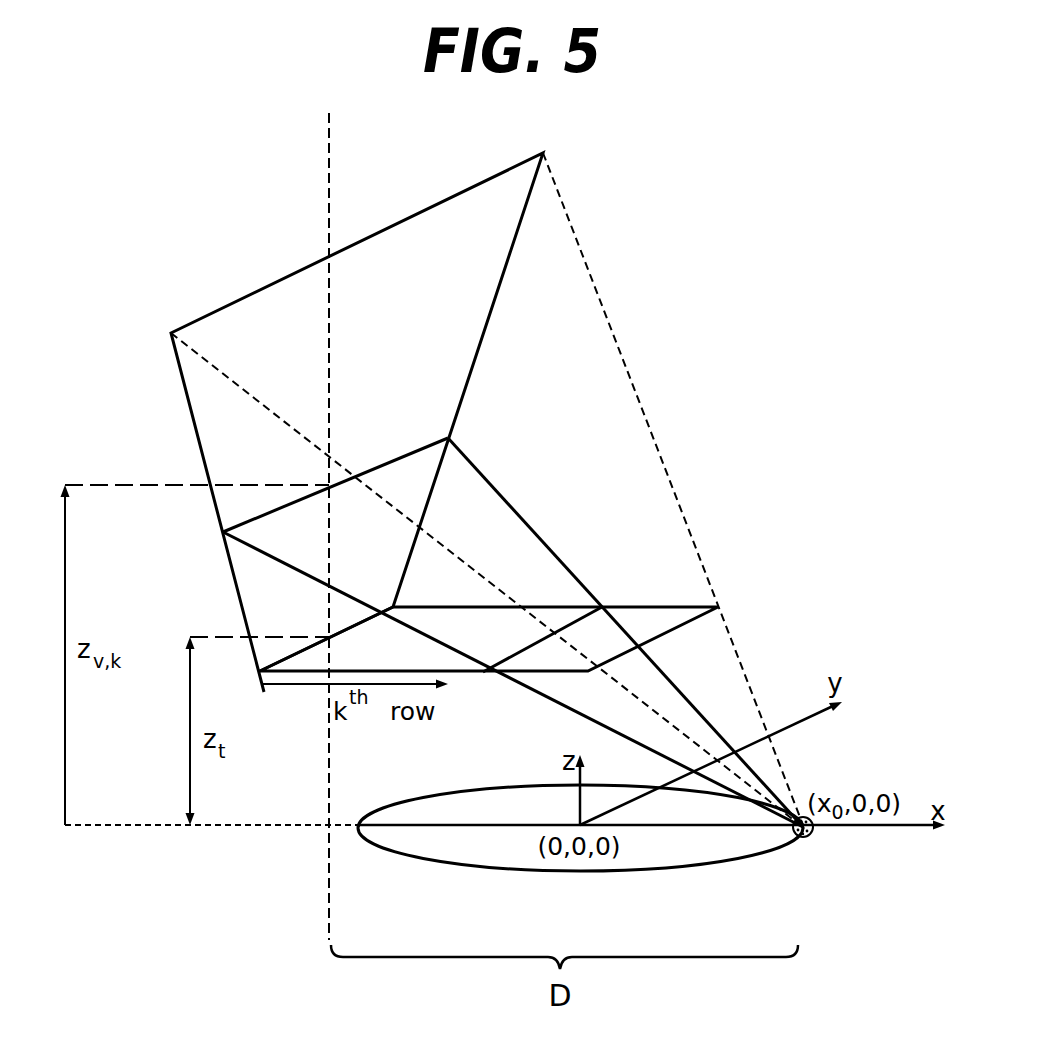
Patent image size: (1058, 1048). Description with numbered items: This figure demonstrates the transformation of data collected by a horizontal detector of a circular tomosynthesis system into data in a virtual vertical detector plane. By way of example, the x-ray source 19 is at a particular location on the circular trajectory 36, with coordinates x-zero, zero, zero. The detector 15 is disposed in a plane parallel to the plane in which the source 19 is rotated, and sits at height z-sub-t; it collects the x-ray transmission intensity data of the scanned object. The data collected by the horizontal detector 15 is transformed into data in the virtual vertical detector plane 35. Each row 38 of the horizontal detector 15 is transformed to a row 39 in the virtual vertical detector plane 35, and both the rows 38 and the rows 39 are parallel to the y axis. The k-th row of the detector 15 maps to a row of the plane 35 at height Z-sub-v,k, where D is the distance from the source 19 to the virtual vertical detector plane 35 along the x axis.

The detector 15 is at (503, 643).
The x-ray source 19 is at (803, 838).
The virtual vertical detector plane 35 is at (408, 334).
The circular trajectory 36 is at (420, 858).
The row of the horizontal detector 38 is at (578, 618).
The row in the virtual vertical detector plane 39 is at (383, 463).